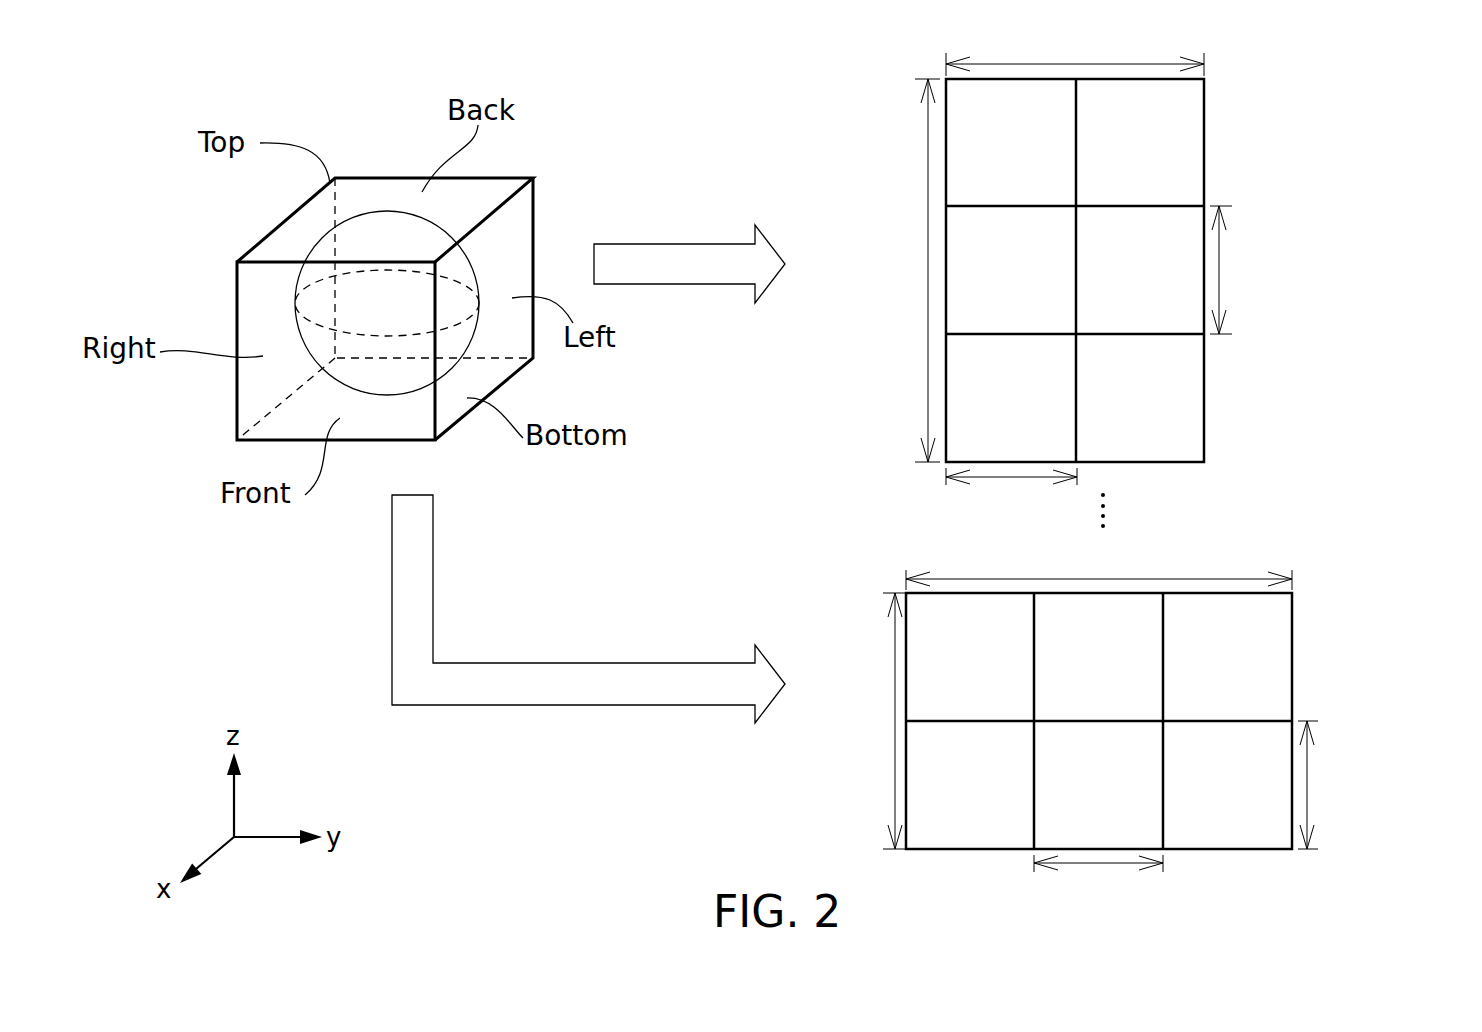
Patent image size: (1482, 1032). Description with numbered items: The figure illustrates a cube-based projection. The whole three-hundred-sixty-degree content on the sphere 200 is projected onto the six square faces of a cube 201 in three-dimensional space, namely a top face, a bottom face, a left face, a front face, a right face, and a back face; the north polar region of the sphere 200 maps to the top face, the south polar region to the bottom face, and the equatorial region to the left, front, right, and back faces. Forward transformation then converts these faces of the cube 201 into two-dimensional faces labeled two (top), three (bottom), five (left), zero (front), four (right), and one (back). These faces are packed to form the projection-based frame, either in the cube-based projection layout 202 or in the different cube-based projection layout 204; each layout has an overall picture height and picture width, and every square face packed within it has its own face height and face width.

The sphere 200 is at (387, 212).
The cube 201 is at (435, 440).
The cube-based projection layout 202 is at (1262, 130).
The cube-based projection layout 204 is at (1314, 617).